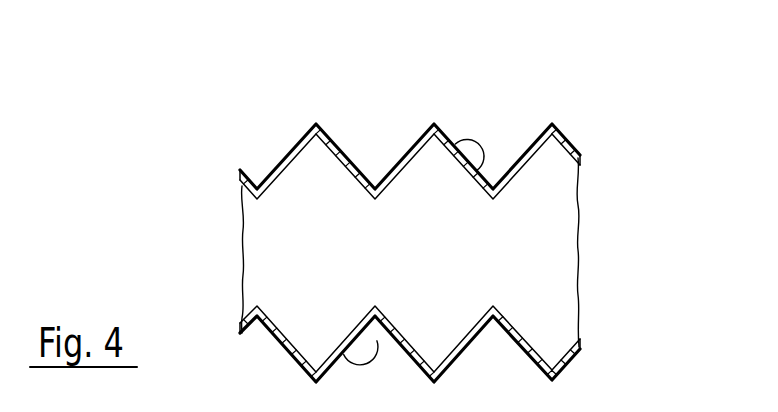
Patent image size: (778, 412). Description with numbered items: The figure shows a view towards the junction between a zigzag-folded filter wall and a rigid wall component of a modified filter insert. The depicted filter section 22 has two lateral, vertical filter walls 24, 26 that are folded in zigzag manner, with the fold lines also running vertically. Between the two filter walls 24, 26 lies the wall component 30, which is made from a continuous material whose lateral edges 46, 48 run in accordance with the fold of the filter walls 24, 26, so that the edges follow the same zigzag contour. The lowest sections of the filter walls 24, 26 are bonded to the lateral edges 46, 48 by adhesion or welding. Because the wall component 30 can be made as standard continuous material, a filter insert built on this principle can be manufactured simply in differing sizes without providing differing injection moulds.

The filter section 22 is at (371, 131).
The filter wall 24 is at (570, 358).
The filter wall 26 is at (516, 150).
The wall component 30 is at (563, 257).
The lateral edge 46 is at (480, 172).
The lateral edge 48 is at (358, 333).